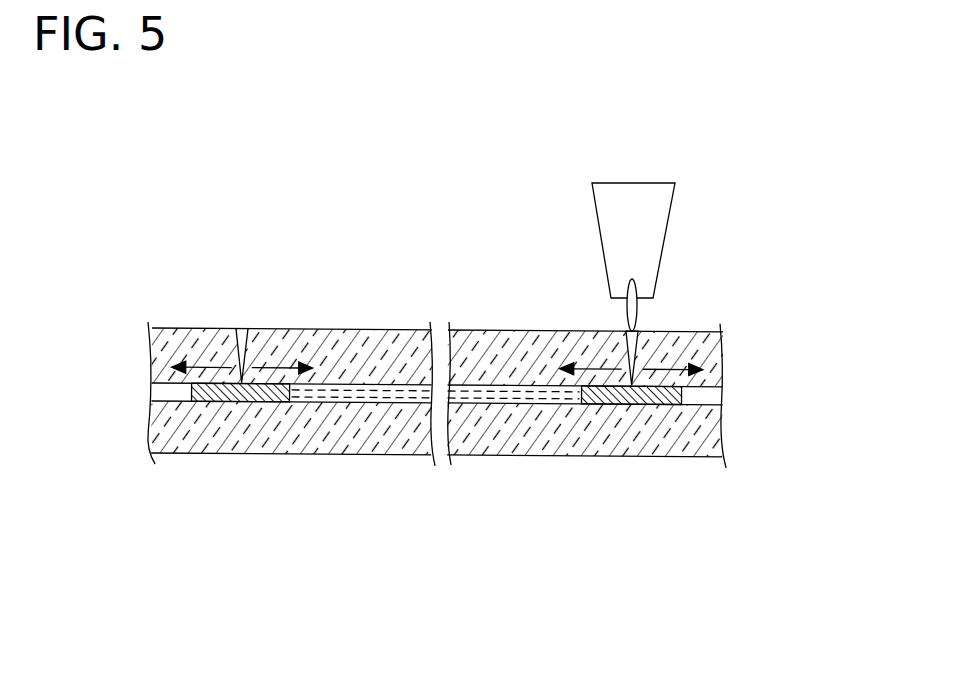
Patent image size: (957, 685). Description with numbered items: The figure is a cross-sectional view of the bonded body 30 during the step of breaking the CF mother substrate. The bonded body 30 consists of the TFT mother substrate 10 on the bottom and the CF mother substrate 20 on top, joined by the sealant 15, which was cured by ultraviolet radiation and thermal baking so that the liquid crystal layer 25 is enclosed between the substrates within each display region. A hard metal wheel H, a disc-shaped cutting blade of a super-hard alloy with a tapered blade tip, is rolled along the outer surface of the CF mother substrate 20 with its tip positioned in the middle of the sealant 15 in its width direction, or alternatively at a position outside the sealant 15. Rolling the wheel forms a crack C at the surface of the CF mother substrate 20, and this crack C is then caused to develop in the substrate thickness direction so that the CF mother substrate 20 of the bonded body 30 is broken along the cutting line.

The TFT mother substrate 10 is at (712, 436).
The CF mother substrate 20 is at (717, 356).
The bonded body 30 is at (834, 328).
The sealant 15 is at (643, 404).
The liquid crystal layer 25 is at (512, 396).
The hard metal wheel H is at (580, 231).
The crack C is at (660, 342).